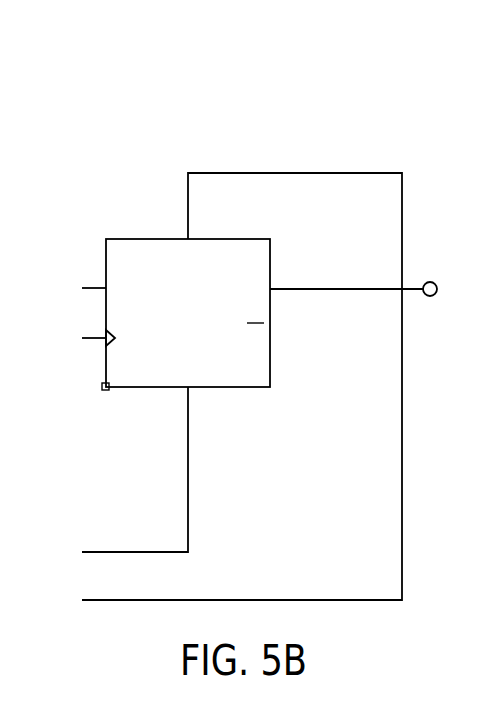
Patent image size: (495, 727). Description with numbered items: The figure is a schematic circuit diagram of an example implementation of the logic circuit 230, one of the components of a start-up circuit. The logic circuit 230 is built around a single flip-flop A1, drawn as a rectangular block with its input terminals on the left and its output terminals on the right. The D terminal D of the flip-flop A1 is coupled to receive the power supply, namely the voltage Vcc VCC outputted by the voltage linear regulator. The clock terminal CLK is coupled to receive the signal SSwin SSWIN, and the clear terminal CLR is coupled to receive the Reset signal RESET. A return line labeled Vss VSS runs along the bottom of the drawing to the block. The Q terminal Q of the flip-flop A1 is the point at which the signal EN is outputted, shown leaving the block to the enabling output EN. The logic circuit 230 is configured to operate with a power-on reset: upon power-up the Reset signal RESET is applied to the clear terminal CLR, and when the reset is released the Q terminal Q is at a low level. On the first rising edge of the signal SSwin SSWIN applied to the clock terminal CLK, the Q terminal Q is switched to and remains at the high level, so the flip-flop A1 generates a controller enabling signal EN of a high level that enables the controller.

The logic circuit 230 is at (323, 110).
The D terminal D is at (123, 290).
The CLK (clock) terminal CLK is at (134, 340).
The Q terminal Q is at (256, 316).
The CLR (clear) terminal CLR is at (188, 373).
The flip-flop A1 is at (209, 221).
The voltage Vcc VCC is at (60, 285).
The signal SSwin SSWIN is at (50, 335).
The Reset signal RESET is at (50, 549).
The ground VSS is at (60, 598).
The signal EN is at (444, 267).